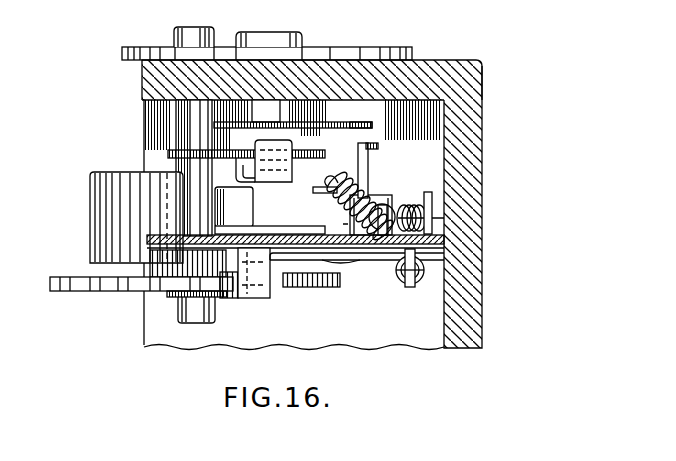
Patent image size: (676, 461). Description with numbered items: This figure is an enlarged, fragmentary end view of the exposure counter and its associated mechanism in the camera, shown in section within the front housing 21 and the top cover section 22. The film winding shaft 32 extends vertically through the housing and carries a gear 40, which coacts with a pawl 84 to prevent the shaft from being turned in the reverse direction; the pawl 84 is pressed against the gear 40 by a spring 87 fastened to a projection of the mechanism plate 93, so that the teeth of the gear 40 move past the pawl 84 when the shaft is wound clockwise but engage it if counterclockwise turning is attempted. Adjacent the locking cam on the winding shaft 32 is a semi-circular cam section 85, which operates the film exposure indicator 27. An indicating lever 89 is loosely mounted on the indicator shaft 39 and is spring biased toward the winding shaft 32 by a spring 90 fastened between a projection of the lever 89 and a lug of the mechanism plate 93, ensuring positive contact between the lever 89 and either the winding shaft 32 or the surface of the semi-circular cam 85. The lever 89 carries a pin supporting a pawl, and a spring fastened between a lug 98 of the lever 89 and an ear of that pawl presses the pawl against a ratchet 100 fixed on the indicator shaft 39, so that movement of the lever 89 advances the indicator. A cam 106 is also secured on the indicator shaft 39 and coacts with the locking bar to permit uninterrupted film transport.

The front housing 21 is at (484, 195).
The top cover section 22 is at (428, 60).
The film exposure indicator 27 is at (363, 38).
The film winding shaft 32 is at (210, 30).
The indicator shaft 39 is at (296, 110).
The gear 40 is at (108, 292).
The pawl 84 is at (258, 298).
The semi-circular cam section 85 is at (90, 208).
The spring 87 is at (400, 279).
The indicating lever 89 is at (300, 226).
The spring 90 is at (405, 206).
The mechanism plate 93 is at (165, 228).
The lug 98 is at (368, 167).
The ratchet 100 is at (368, 150).
The cam 106 is at (366, 123).